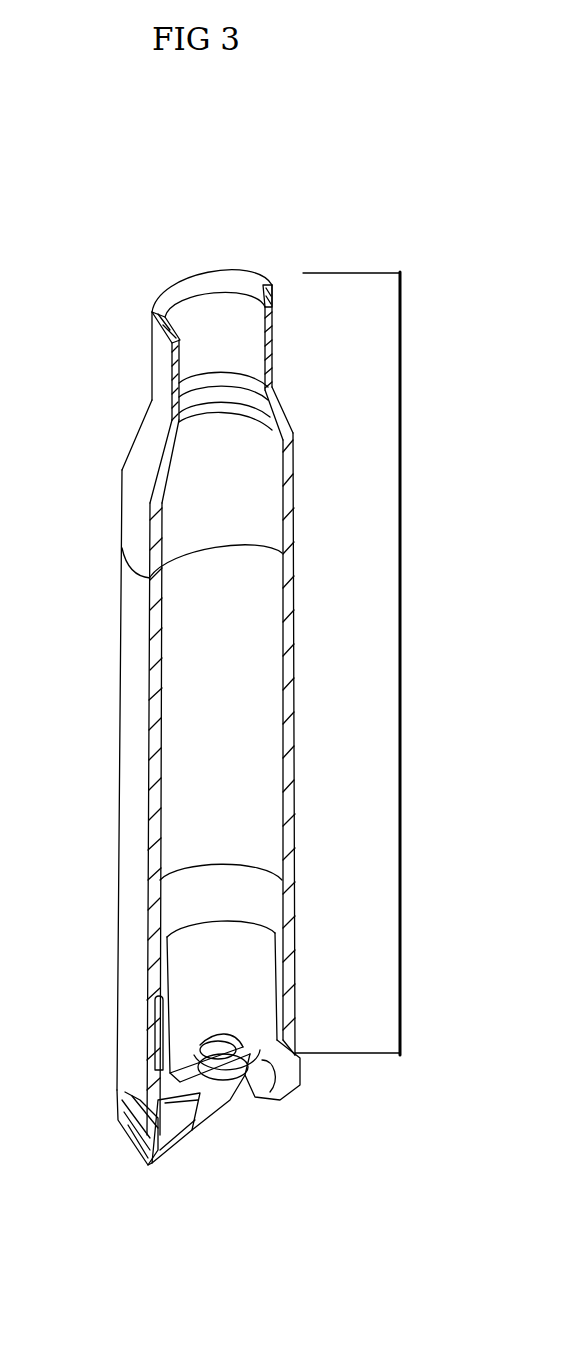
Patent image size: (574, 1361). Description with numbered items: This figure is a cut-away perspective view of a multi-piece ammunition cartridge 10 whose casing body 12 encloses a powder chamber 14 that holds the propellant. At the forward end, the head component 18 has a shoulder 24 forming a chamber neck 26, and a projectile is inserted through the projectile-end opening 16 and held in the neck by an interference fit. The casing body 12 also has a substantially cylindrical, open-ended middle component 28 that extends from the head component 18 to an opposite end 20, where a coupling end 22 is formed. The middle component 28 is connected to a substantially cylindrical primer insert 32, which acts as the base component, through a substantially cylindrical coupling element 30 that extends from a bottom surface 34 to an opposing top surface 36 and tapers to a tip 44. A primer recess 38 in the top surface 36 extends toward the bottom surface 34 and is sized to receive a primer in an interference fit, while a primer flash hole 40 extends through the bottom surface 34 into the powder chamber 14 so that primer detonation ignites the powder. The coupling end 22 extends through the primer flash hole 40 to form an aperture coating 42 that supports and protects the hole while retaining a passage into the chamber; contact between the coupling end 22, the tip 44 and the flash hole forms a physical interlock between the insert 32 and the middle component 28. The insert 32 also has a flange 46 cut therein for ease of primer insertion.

The ammunition cartridge 10 is at (213, 716).
The casing body 12 is at (409, 658).
The powder chamber 14 is at (236, 726).
The projectile-end opening 16 is at (234, 286).
The head component 18 is at (121, 500).
The opposite end 20 is at (172, 962).
The coupling end 22 is at (298, 958).
The shoulder 24 is at (140, 420).
The chamber neck 26 is at (150, 365).
The middle component 28 is at (118, 805).
The coupling element 30 is at (285, 1012).
The primer insert 32 is at (132, 1163).
The bottom surface 34 is at (238, 1100).
The top surface 36 is at (172, 1157).
The primer recess 38 is at (188, 1123).
The primer flash hole 40 is at (225, 1040).
The aperture coating 42 is at (203, 1044).
The tip 44 is at (300, 905).
The flange 46 is at (112, 1128).